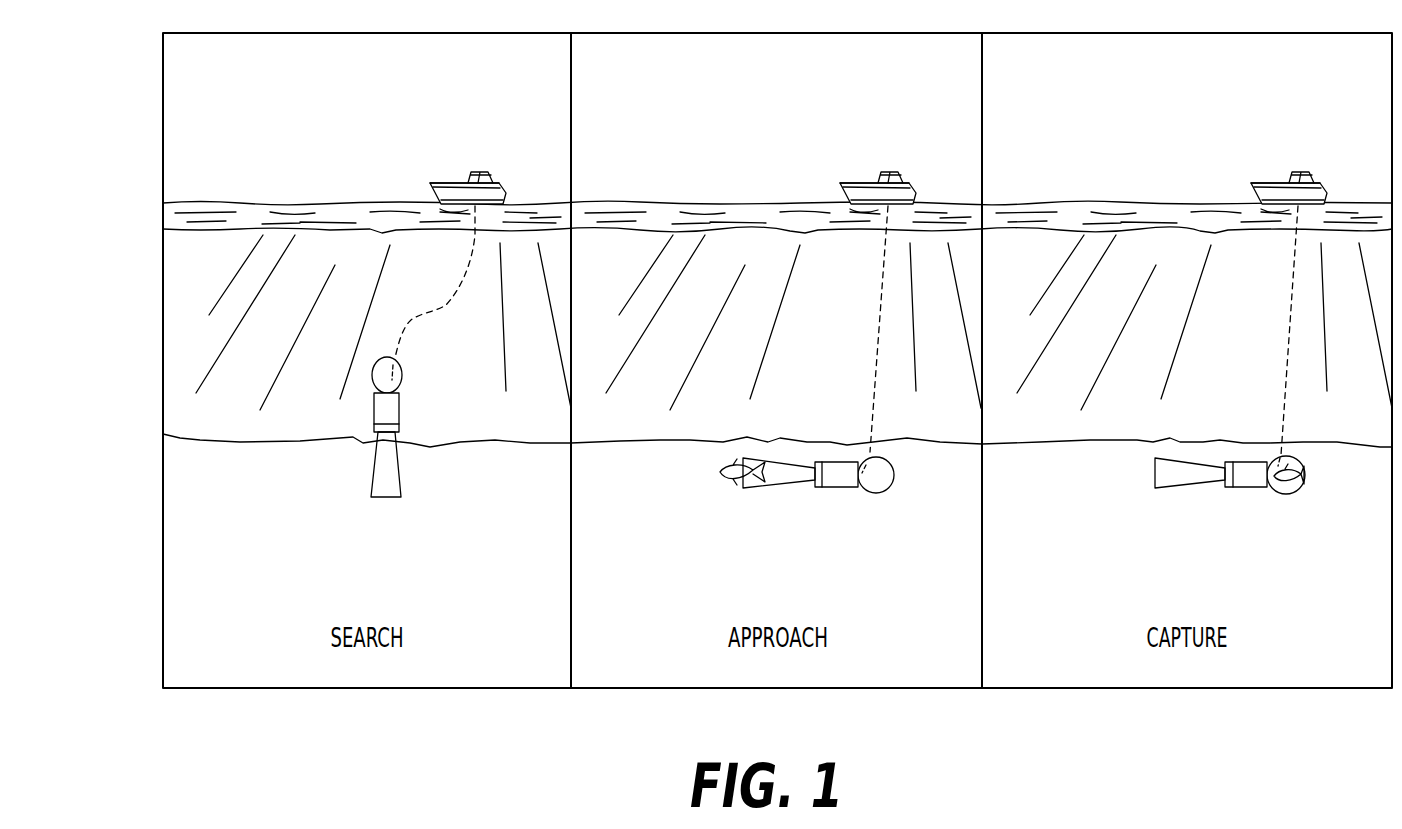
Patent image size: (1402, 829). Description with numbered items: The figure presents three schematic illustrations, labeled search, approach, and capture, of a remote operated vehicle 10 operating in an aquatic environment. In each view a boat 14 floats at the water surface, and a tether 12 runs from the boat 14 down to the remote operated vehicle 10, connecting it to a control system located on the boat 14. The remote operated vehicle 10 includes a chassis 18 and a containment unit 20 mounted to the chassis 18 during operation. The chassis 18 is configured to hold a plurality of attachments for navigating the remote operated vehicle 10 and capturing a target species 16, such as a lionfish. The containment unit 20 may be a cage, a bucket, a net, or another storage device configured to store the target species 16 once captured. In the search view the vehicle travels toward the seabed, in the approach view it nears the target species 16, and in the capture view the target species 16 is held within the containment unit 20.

The remote operated vehicle 10 is at (811, 473).
The tether 12 is at (471, 262).
The boat 14 is at (494, 181).
The target species 16 is at (735, 456).
The chassis 18 is at (400, 411).
The containment unit 20 is at (402, 377).